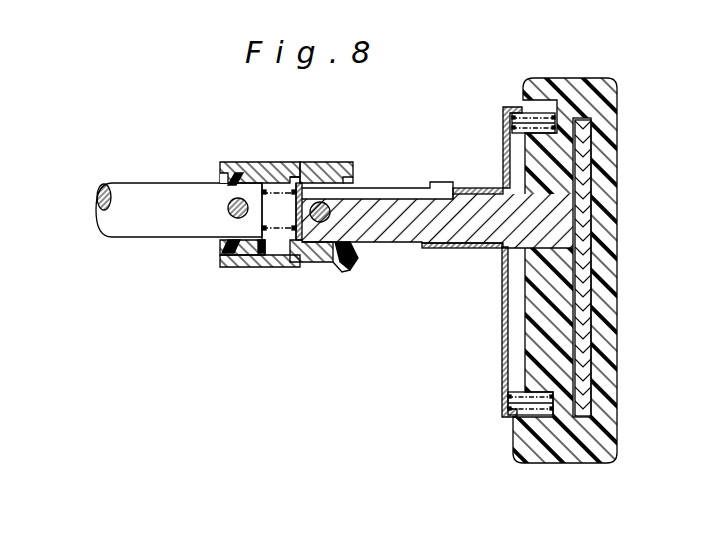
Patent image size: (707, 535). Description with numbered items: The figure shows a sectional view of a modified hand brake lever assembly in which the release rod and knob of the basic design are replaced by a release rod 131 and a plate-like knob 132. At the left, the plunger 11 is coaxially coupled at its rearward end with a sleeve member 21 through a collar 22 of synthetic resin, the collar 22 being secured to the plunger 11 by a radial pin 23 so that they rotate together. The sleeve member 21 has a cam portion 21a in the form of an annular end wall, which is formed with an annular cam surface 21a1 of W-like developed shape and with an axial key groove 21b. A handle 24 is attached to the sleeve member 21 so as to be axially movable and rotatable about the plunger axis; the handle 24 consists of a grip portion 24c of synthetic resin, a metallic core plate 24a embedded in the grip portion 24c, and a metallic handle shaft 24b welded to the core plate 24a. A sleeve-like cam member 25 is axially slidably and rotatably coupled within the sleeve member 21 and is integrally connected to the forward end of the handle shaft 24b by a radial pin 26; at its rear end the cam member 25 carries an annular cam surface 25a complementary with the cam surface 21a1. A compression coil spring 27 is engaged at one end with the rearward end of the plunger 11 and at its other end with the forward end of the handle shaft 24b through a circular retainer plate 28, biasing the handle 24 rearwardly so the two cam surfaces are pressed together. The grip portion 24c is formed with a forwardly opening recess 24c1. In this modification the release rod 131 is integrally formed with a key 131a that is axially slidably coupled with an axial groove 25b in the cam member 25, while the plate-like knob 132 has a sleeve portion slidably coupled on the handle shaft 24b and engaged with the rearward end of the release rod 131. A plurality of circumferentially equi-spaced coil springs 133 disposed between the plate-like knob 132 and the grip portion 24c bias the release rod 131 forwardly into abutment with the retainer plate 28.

The plunger 11 is at (141, 232).
The sleeve member 21 is at (244, 264).
The cam portion 21a is at (352, 262).
The annular cam surface 21a1 is at (347, 270).
The axial key groove 21b is at (352, 180).
The collar 22 is at (222, 247).
The radial pin 23 is at (228, 210).
The handle 24 is at (618, 181).
The metallic core plate 24a is at (588, 318).
The metallic handle shaft 24b is at (464, 246).
The grip portion 24c is at (612, 346).
The forwardly opening recess 24c1 is at (483, 192).
The cam member 25 is at (308, 252).
The annular cam surface 25a is at (350, 248).
The axial groove 25b is at (296, 183).
The radial pin 26 is at (320, 254).
The compression coil spring 27 is at (272, 178).
The circular retainer plate 28 is at (292, 220).
The release rod 131 is at (399, 194).
The key 131a is at (322, 186).
The plate-like knob 132 is at (505, 150).
The coil springs 133 is at (510, 112).